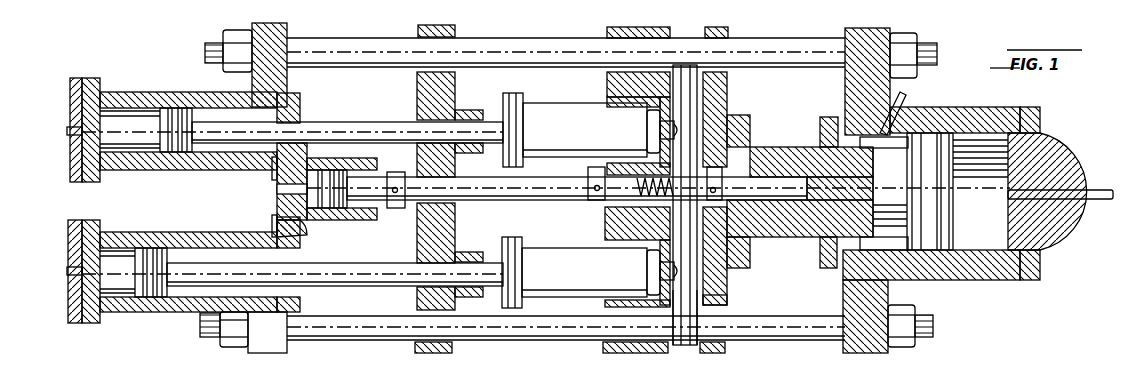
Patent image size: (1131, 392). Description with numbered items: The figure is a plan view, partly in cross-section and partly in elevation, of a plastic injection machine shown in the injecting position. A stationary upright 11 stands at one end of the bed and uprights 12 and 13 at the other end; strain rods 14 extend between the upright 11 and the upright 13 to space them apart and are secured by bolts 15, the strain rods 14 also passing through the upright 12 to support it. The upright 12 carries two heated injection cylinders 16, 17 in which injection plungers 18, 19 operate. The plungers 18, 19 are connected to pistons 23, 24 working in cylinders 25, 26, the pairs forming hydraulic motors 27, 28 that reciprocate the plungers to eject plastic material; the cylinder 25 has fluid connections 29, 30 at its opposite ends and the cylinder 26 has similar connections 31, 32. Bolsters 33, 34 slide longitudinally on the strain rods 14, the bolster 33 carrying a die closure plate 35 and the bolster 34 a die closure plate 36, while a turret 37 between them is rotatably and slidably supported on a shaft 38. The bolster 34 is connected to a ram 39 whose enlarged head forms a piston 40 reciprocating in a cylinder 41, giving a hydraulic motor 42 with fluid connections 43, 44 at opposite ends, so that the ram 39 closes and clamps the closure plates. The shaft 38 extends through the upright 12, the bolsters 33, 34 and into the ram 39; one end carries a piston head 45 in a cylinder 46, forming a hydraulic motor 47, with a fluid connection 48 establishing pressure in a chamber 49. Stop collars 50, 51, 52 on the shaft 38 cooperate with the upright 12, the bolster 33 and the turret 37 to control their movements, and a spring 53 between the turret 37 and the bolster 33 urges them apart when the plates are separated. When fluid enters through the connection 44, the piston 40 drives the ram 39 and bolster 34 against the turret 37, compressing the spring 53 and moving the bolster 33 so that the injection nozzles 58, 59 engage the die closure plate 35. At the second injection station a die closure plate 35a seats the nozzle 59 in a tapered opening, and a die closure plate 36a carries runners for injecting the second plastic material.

The upright 11 is at (860, 353).
The upright 12 is at (432, 353).
The upright 13 is at (262, 350).
The strain rods 14 is at (532, 40).
The bolts 15 is at (226, 347).
The injection cylinder 16 is at (548, 252).
The injection cylinder 17 is at (548, 113).
The injection plunger 18 is at (375, 263).
The injection plunger 19 is at (378, 122).
The piston 23 is at (148, 297).
The piston 24 is at (172, 152).
The cylinder 25 is at (108, 312).
The cylinder 26 is at (115, 170).
The hydraulic motor 27 is at (66, 313).
The hydraulic motor 28 is at (68, 160).
The fluid connection 29 is at (67, 271).
The fluid connection 30 is at (272, 220).
The fluid connection 31 is at (67, 131).
The fluid connection 32 is at (272, 178).
The bolster 33 is at (630, 27).
The bolster 34 is at (727, 300).
The die closure plate 35 is at (675, 300).
The die closure plate 35a is at (607, 97).
The die closure plate 36 is at (697, 300).
The die closure plate 36a is at (700, 90).
The turret 37 is at (685, 80).
The shaft 38 is at (483, 180).
The ram 39 is at (790, 150).
The piston 40 is at (930, 140).
The cylinder 41 is at (970, 270).
The hydraulic motor 42 is at (1042, 137).
The fluid connection 43 is at (903, 95).
The fluid connection 44 is at (1082, 190).
The piston head 45 is at (334, 170).
The cylinder 46 is at (319, 170).
The hydraulic motor 47 is at (358, 160).
The fluid connection 48 is at (285, 190).
The chamber 49 is at (313, 208).
The stop collar 50 is at (396, 172).
The stop collar 51 is at (588, 173).
The stop collar 52 is at (722, 175).
The spring 53 is at (605, 222).
The injection nozzle 58 is at (650, 268).
The injection nozzle 59 is at (652, 127).